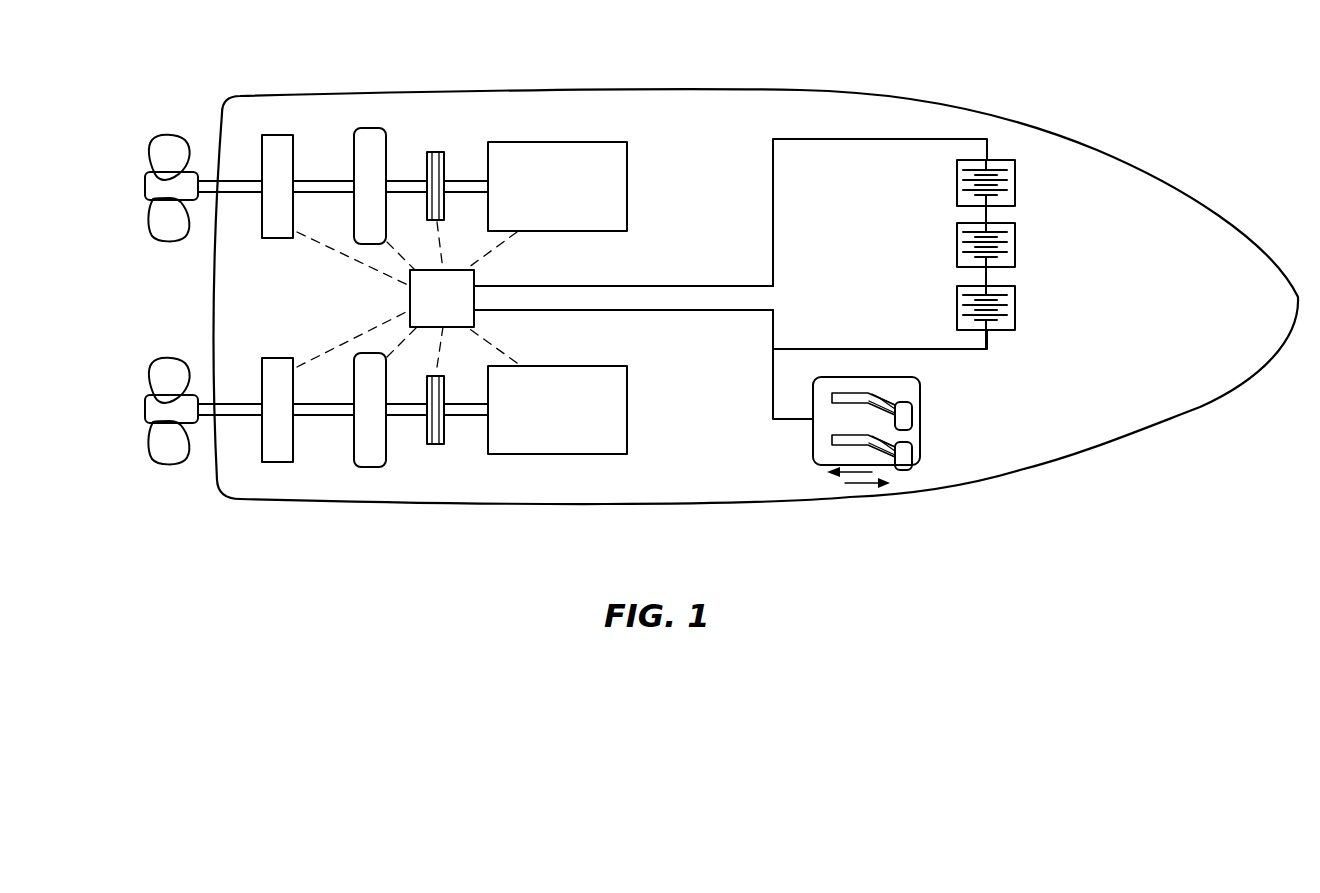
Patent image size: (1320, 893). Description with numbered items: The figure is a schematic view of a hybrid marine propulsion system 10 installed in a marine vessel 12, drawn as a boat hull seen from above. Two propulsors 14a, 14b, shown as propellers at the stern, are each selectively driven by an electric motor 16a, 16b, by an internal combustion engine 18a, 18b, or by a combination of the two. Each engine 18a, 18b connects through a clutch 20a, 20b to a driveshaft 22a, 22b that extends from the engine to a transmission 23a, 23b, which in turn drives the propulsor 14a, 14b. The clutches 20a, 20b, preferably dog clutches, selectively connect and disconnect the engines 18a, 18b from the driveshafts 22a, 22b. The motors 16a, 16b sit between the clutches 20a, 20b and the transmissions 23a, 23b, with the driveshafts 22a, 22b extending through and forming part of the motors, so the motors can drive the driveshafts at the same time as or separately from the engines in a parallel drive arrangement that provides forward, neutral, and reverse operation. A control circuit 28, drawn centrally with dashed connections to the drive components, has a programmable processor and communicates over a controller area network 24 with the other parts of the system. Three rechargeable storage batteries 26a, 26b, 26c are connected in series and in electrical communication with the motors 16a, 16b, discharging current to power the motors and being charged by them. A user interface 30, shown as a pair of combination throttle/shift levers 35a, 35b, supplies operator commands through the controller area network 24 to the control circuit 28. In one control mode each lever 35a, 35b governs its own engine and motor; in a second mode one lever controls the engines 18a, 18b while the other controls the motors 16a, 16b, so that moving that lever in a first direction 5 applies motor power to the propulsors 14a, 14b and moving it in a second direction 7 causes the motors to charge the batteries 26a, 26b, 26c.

The first direction 5 is at (870, 485).
The second direction 7 is at (840, 477).
The hybrid marine propulsion system 10 is at (715, 425).
The marine vessel 12 is at (1162, 133).
The propulsor 14a is at (177, 137).
The propulsor 14b is at (178, 457).
The electric motor 16a is at (372, 128).
The electric motor 16b is at (368, 467).
The internal combustion engine 18a is at (573, 142).
The internal combustion engine 18b is at (597, 454).
The clutch 20a is at (436, 152).
The clutch 20b is at (436, 444).
The driveshaft 22a is at (330, 180).
The driveshaft 22b is at (330, 416).
The transmission 23a is at (280, 135).
The transmission 23b is at (280, 462).
The controller area network 24 is at (888, 138).
The rechargeable storage battery 26a is at (1015, 192).
The rechargeable storage battery 26b is at (1015, 255).
The rechargeable storage battery 26c is at (1015, 317).
The control circuit 28 is at (422, 298).
The user interface 30 is at (881, 477).
The throttle/shift lever 35a is at (907, 408).
The throttle/shift lever 35b is at (907, 450).